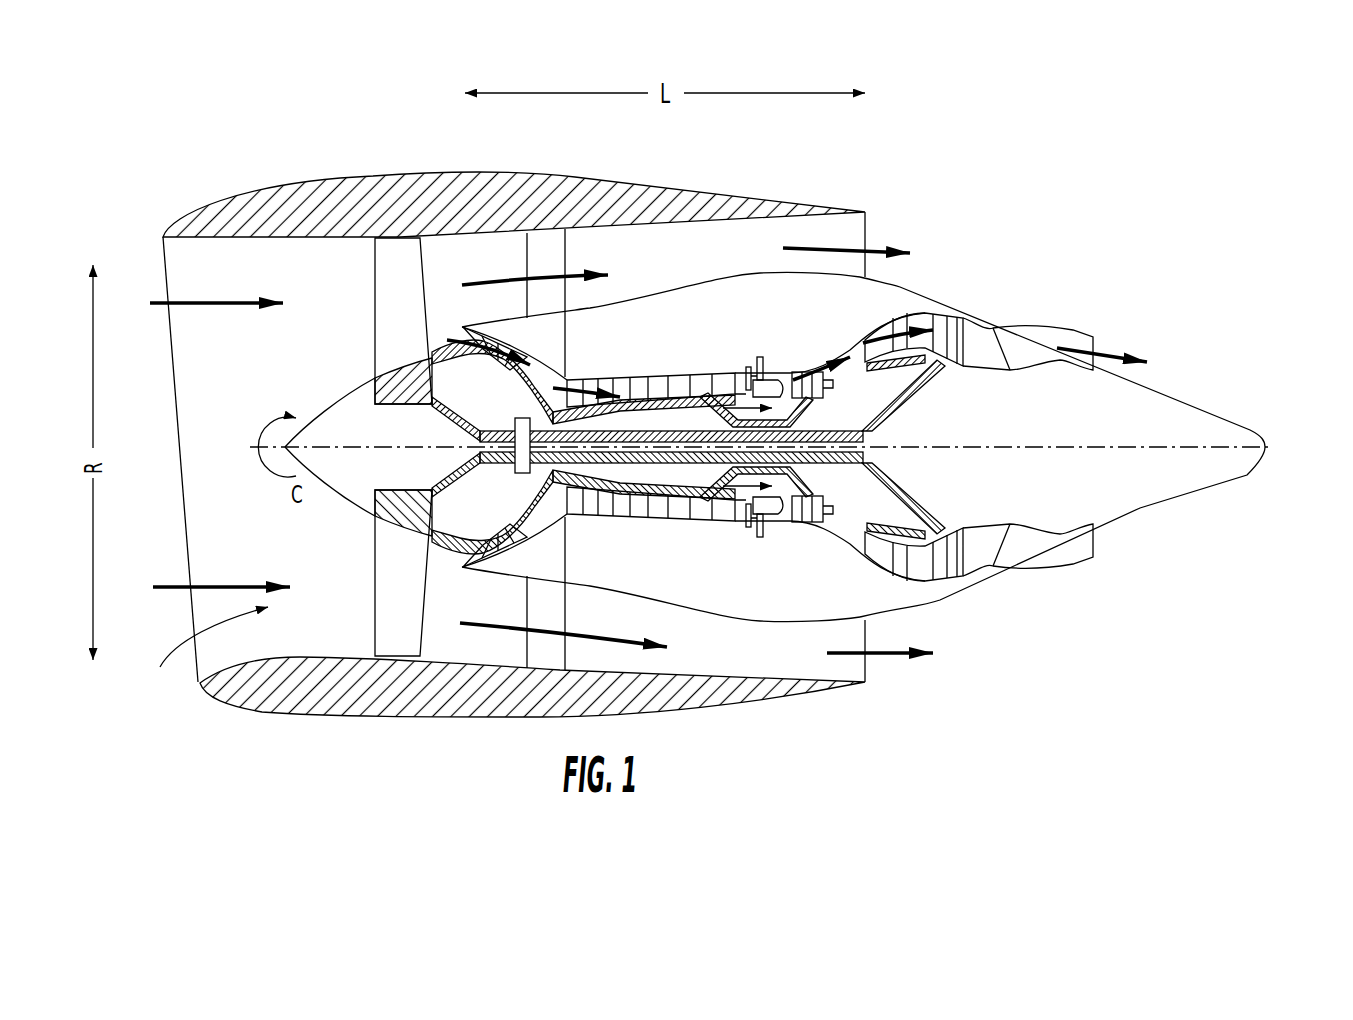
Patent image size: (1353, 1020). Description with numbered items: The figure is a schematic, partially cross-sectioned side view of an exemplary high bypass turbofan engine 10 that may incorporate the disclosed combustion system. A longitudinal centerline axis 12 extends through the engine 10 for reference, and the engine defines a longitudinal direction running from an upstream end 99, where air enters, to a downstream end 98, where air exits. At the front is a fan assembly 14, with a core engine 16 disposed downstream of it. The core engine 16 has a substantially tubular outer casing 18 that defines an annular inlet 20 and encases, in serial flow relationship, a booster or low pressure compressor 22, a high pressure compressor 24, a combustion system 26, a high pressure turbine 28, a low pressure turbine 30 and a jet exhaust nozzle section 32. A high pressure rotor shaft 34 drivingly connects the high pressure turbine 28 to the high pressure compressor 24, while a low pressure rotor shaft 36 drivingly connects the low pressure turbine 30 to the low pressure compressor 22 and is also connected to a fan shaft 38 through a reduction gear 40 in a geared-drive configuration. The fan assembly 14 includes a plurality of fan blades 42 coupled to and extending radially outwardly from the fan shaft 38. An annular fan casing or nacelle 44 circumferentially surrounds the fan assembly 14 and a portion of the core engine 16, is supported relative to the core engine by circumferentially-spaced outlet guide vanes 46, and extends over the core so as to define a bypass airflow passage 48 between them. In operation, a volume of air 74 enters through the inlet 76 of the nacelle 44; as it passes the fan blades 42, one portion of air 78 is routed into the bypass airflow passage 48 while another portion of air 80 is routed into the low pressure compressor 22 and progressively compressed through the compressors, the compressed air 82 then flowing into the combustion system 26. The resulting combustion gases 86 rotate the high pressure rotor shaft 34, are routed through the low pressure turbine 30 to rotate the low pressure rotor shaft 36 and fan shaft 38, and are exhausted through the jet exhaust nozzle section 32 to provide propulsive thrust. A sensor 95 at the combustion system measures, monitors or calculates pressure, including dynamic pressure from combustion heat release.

The high bypass turbofan engine 10 is at (1005, 197).
The longitudinal centerline axis 12 is at (1033, 447).
The fan assembly 14 is at (448, 250).
The core engine 16 is at (758, 262).
The outer casing 18 is at (720, 612).
The annular inlet 20 is at (460, 553).
The low pressure compressor 22 is at (523, 518).
The high pressure compressor 24 is at (593, 503).
The combustion system 26 is at (767, 510).
The high pressure turbine 28 is at (824, 503).
The low pressure turbine 30 is at (947, 585).
The jet exhaust nozzle section 32 is at (1013, 565).
The high pressure rotor shaft 34 is at (823, 417).
The low pressure rotor shaft 36 is at (898, 400).
The fan shaft 38 is at (427, 413).
The reduction gear 40 is at (520, 418).
The fan blades 42 is at (390, 277).
The nacelle 44 is at (373, 178).
The outlet guide vanes 46 is at (560, 258).
The bypass airflow passage 48 is at (692, 274).
The volume of air 74 is at (198, 303).
The inlet 76 is at (202, 656).
The bypass air portion 78 is at (513, 277).
The core air portion 80 is at (462, 333).
The compressed air 82 is at (573, 378).
The combustion gases 86 is at (810, 370).
The sensor 95 is at (760, 355).
The downstream end 98 is at (1319, 460).
The upstream end 99 is at (164, 467).